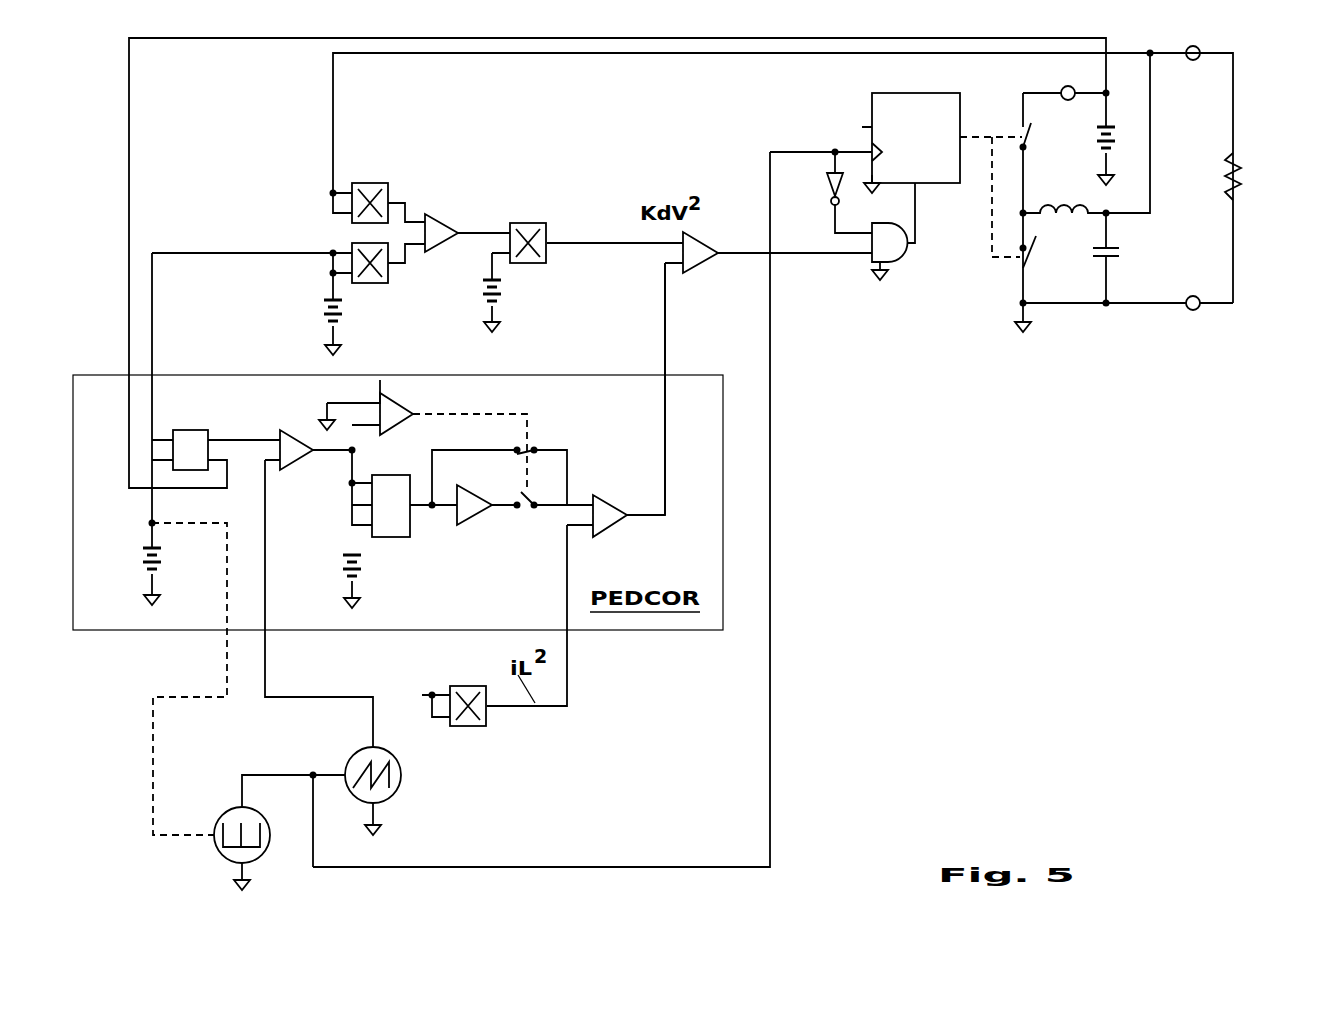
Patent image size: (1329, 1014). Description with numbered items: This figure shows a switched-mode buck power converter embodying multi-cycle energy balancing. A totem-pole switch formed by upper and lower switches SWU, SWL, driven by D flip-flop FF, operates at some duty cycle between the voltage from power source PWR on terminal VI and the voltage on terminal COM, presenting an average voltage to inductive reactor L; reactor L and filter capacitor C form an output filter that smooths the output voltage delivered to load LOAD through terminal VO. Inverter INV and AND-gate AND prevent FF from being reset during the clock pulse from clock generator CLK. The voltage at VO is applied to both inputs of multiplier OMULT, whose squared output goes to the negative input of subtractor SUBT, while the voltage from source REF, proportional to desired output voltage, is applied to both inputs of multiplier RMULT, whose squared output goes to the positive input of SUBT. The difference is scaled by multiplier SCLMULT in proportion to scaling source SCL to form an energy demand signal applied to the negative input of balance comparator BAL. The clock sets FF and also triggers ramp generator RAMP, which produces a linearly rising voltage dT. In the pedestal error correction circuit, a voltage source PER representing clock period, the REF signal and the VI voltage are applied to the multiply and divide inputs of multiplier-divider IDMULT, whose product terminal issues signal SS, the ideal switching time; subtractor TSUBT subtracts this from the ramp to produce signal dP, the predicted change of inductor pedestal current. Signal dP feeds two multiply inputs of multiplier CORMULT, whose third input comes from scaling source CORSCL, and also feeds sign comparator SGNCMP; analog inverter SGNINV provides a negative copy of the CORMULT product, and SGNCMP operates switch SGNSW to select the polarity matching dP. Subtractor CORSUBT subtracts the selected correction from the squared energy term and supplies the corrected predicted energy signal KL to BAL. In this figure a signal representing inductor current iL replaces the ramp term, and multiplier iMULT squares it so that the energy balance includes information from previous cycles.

The multiplier OMULT is at (377, 182).
The multiplier RMULT is at (377, 287).
The source REF is at (323, 313).
The subtractor SUBT is at (450, 205).
The multiplier SCLMULT is at (562, 203).
The scaling source SCL is at (503, 308).
The balance comparator BAL is at (705, 265).
The inverter INV is at (827, 183).
The D flip-flop FF is at (918, 93).
The AND-gate AND is at (900, 250).
The upper switch SWU is at (1023, 130).
The lower switch SWL is at (1031, 262).
The terminal VI is at (1082, 75).
The terminal VO is at (1197, 46).
The terminal COM is at (1197, 308).
The power source PWR is at (1117, 145).
The load LOAD is at (1242, 172).
The inductive reactor L is at (1077, 180).
The filter capacitor C is at (1120, 244).
The multiplier-divider IDMULT is at (195, 417).
The signal SS is at (257, 445).
The subtractor TSUBT is at (298, 462).
The signal dP is at (353, 437).
The sign comparator SGNCMP is at (407, 388).
The switch SGNSW is at (530, 447).
The multiplier CORMULT is at (393, 538).
The scaling source CORSCL is at (358, 575).
The analog inverter SGNINV is at (477, 510).
The subtractor CORSUBT is at (610, 527).
The correction signal KL is at (667, 428).
The voltage source PER is at (143, 565).
The voltage dT is at (348, 692).
The signal iL is at (417, 692).
The multiplier iMULT is at (483, 728).
The ramp generator RAMP is at (397, 793).
The clock generator CLK is at (217, 817).